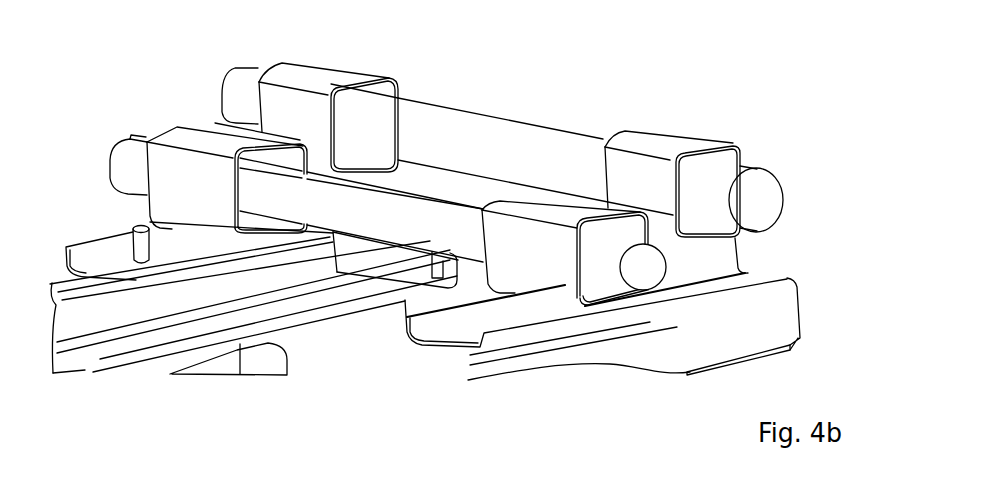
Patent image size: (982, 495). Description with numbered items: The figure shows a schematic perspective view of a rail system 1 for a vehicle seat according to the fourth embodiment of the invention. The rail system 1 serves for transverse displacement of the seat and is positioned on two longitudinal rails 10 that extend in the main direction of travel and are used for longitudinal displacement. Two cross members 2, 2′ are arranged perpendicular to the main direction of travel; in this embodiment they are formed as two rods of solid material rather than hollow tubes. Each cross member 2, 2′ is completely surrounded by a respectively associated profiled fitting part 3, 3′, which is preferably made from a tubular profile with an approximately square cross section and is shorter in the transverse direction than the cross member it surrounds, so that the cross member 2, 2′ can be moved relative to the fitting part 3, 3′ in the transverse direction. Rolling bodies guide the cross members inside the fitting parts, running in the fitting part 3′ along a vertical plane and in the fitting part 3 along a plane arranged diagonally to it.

The rail system 1 is at (569, 110).
The cross member 2 is at (765, 191).
The cross member 2′ is at (650, 270).
The fitting part 3 is at (331, 80).
The fitting part 3′ is at (198, 133).
The longitudinal rails 10 is at (763, 317).